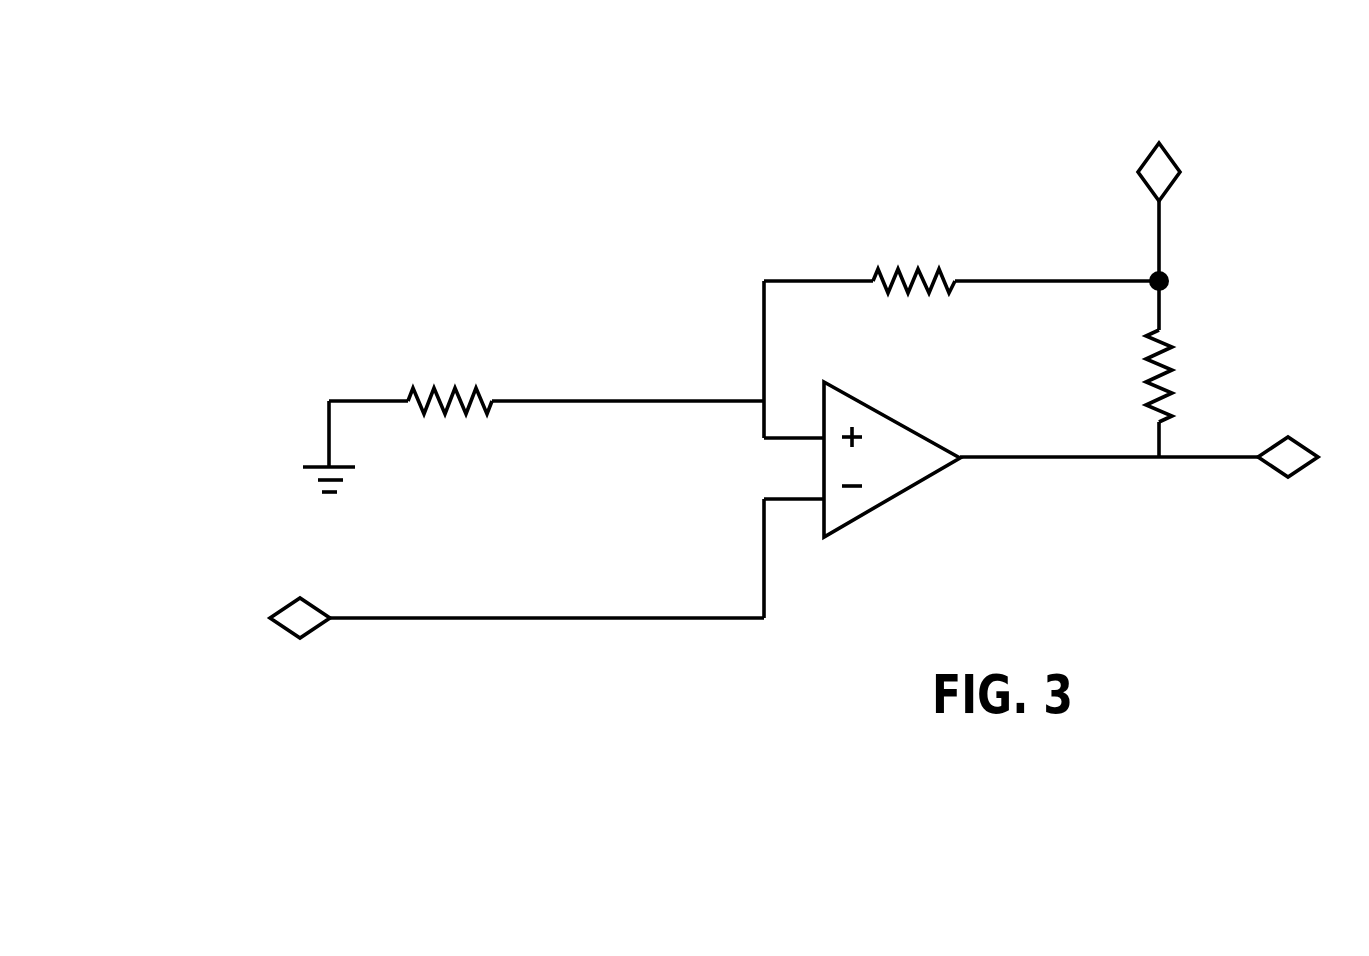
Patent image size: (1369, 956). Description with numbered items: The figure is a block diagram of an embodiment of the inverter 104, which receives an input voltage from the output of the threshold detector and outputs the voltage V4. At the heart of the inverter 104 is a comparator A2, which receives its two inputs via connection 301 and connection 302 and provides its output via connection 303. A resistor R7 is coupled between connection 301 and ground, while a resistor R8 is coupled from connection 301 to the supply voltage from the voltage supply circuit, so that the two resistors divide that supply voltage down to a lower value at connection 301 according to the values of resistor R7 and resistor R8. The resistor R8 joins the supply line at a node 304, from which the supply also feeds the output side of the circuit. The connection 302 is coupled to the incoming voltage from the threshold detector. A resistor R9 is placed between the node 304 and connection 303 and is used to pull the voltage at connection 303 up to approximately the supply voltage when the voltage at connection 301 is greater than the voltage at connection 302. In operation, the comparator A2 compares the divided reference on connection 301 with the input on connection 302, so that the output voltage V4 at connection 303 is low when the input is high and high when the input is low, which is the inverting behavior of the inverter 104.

The inverter 104 is at (218, 130).
The connection 301 is at (793, 438).
The connection 302 is at (783, 499).
The connection 303 is at (997, 455).
The node connected to voltage supply 304 is at (1170, 277).
The resistor R7 is at (546, 381).
The resistor R8 is at (961, 353).
The resistor R9 is at (1183, 393).
The comparator A2 is at (917, 487).
The voltage V4 is at (1309, 457).